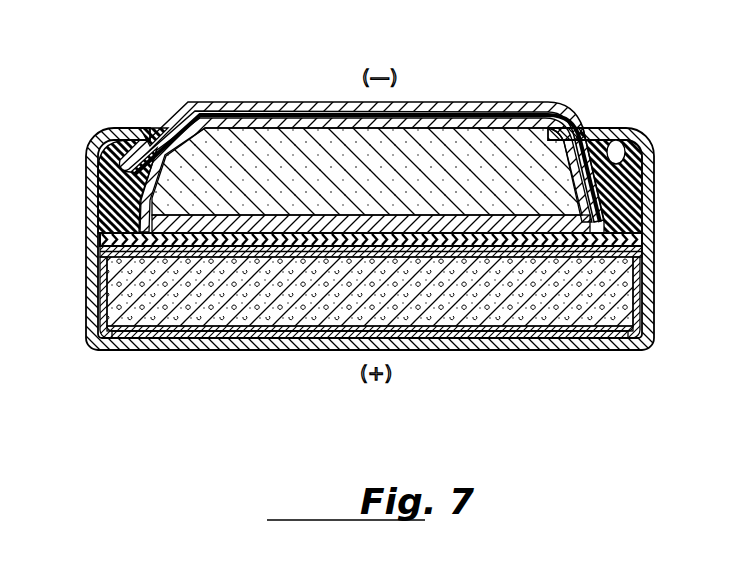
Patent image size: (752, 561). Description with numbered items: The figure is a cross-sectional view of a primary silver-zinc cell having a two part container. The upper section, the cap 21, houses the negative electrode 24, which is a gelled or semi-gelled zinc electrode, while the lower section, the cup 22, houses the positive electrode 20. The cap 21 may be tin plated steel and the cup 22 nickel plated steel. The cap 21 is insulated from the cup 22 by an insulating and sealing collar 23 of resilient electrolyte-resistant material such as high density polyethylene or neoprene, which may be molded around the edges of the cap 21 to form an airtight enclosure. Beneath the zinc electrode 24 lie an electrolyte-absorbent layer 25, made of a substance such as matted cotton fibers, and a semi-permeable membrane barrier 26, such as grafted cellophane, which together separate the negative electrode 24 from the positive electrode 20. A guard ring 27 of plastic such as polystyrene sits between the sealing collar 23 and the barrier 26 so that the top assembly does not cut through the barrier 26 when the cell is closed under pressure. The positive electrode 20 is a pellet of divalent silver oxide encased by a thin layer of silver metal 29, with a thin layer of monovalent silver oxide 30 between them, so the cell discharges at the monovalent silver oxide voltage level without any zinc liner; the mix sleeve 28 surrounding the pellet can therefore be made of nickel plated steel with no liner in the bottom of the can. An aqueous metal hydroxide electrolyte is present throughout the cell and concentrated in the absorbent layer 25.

The positive electrode 20 is at (147, 290).
The cap 21 is at (503, 107).
The cup 22 is at (654, 160).
The insulating and sealing collar 23 is at (620, 208).
The negative electrode 24 is at (314, 165).
The electrolyte-absorbent layer 25 is at (237, 223).
The membrane barrier 26 is at (305, 253).
The guard ring 27 is at (600, 236).
The mix sleeve 28 is at (637, 279).
The thin layer of silver metal 29 is at (487, 331).
The thin layer of monovalent silver oxide 30 is at (443, 338).